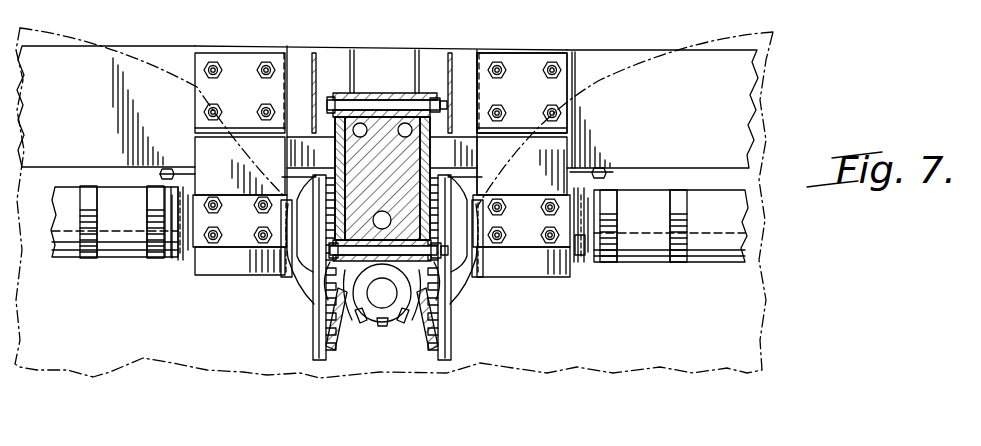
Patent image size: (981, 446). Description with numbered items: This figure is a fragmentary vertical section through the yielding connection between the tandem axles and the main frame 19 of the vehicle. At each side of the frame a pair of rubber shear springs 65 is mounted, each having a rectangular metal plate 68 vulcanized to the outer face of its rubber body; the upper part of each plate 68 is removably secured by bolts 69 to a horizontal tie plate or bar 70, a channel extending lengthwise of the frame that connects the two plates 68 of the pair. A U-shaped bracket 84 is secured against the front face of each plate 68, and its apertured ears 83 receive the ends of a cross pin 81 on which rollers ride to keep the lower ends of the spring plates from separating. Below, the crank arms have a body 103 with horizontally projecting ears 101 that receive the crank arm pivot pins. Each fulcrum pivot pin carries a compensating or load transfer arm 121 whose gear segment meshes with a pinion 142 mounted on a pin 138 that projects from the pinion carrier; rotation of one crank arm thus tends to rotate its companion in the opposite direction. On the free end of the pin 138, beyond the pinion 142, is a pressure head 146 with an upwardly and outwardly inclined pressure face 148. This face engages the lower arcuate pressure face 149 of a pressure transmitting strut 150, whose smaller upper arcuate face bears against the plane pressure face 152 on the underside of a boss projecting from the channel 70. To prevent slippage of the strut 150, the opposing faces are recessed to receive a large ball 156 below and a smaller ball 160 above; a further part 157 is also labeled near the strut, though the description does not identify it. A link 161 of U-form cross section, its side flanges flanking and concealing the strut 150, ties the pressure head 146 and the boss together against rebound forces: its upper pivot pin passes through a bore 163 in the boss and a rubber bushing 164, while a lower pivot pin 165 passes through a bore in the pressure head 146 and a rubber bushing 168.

The main frame 19 is at (750, 78).
The rubber shear spring 65 is at (224, 282).
The metal plate 68 is at (195, 155).
The bolts 69 is at (262, 62).
The tie plate or bar 70 is at (528, 58).
The cross pin 81 is at (588, 246).
The apertured ears 83 is at (186, 228).
The U-shaped bracket 84 is at (225, 245).
The ears 101 is at (150, 212).
The body of the crank arm 103 is at (72, 256).
The compensating or load transfer arm 121 is at (460, 262).
The pin 138 is at (372, 300).
The pinion 142 is at (445, 284).
The pressure head 146 is at (383, 309).
The pressure face 148 is at (330, 186).
The lower arcuate pressure face 149 is at (325, 290).
The pressure transmitting strut 150 is at (431, 154).
The plane pressure face 152 is at (432, 150).
The large ball 156 is at (338, 160).
The post 157 is at (355, 93).
The smaller ball 160 is at (330, 100).
The link 161 is at (335, 125).
The bore 163 is at (362, 93).
The rubber bushing 164 is at (400, 93).
The pivot pin 165 is at (475, 227).
The rubber bushing 168 is at (440, 300).